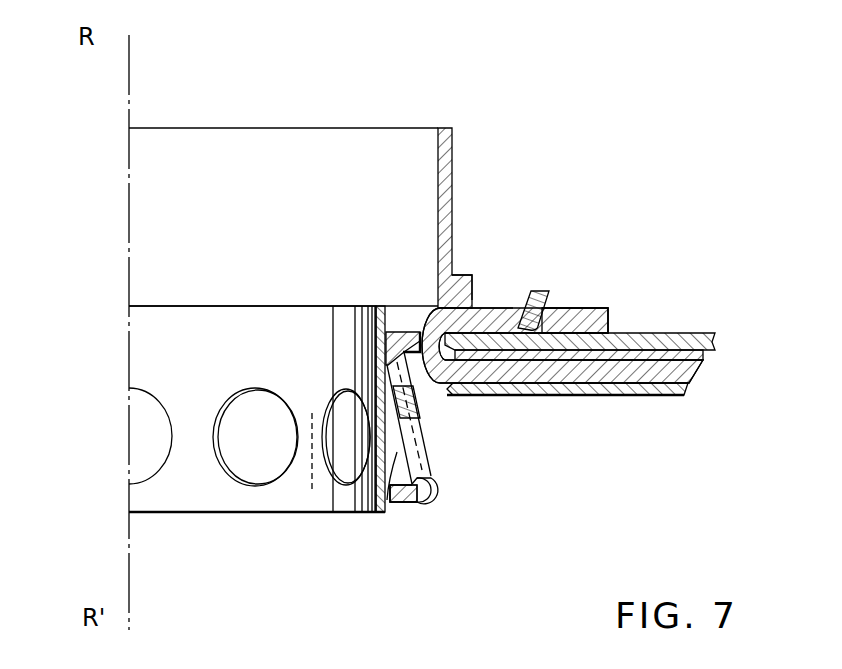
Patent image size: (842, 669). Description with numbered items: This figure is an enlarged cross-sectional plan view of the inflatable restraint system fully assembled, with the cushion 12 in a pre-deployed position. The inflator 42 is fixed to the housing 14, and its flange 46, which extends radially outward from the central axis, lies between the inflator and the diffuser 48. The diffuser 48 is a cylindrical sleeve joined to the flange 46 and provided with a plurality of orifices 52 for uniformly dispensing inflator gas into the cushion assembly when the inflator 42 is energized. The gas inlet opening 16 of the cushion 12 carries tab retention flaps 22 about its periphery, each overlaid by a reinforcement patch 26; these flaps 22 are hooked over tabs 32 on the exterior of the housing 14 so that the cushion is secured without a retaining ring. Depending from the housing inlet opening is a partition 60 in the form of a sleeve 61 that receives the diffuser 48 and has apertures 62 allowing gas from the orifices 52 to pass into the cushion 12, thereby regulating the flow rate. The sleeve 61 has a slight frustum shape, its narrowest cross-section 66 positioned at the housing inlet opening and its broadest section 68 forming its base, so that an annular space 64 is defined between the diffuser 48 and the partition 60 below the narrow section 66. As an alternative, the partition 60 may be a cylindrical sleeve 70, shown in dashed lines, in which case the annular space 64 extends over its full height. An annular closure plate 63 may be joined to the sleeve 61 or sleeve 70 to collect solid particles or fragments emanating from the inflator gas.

The cushion 12 is at (647, 400).
The housing 14 is at (650, 333).
The gas inlet opening 16 is at (573, 397).
The tab retention flaps 22 is at (568, 308).
The reinforcement patch 26 is at (700, 360).
The tabs 32 is at (545, 288).
The inflator 42 is at (360, 124).
The flange 46 is at (463, 277).
The diffuser 48 is at (148, 372).
The orifices 52 is at (250, 405).
The partition 60 is at (443, 478).
The sleeve 61 is at (384, 368).
The apertures 62 is at (433, 476).
The annular closure plate 63 is at (430, 505).
The annular space 64 is at (403, 504).
The narrowest cross-section 66 is at (386, 339).
The broadest section 68 is at (427, 498).
The cylindrical sleeve 70 is at (414, 396).